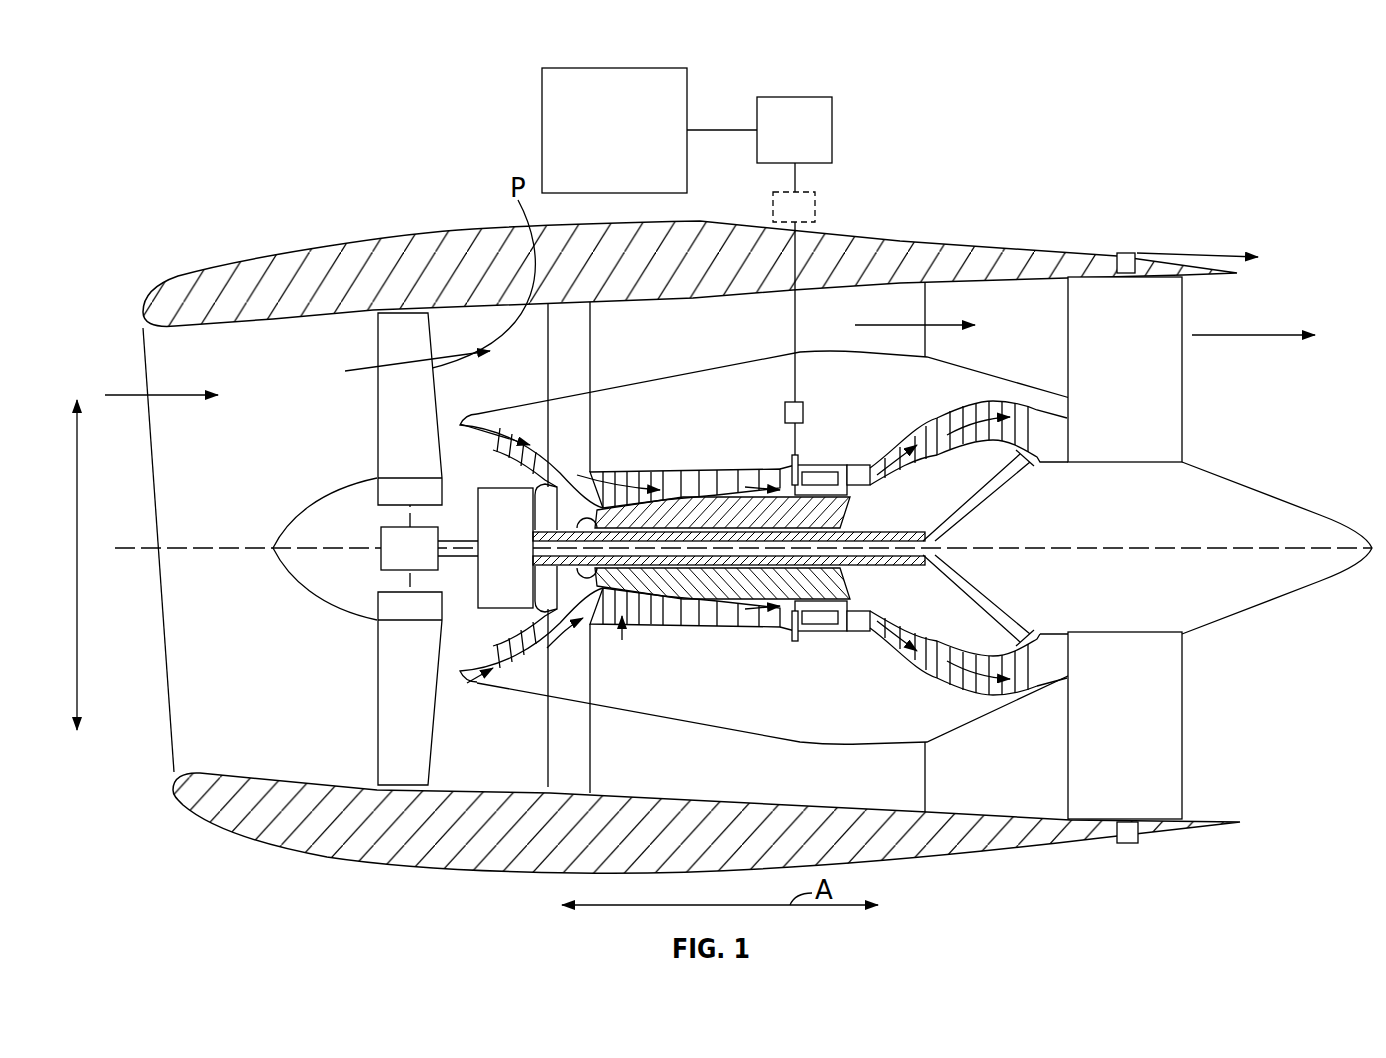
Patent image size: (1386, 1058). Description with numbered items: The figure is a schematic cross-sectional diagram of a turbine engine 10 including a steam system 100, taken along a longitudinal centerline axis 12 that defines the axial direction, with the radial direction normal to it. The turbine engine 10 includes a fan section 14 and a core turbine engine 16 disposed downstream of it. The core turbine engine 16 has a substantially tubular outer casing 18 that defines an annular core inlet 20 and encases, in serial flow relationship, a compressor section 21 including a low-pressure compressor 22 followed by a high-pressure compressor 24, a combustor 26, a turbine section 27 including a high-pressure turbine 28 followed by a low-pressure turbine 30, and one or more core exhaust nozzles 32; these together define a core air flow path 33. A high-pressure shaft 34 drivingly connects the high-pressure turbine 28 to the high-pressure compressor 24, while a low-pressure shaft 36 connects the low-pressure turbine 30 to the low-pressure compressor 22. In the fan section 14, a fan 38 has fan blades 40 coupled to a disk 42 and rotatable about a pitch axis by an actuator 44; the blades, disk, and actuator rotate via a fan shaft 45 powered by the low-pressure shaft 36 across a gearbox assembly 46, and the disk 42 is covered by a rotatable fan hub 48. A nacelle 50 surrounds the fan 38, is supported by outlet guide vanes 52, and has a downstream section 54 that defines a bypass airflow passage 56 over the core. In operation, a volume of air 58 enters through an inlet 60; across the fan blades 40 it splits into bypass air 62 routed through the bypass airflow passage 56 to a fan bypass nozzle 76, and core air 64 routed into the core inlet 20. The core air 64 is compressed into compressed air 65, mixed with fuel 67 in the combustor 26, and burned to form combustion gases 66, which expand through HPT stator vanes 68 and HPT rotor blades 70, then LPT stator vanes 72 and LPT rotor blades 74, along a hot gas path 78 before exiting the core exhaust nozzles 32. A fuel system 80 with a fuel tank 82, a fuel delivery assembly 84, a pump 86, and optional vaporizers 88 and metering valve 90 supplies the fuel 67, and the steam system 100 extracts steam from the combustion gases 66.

The turbine engine 10 is at (257, 240).
The longitudinal centerline axis 12 is at (1175, 545).
The fan section 14 is at (350, 331).
The core turbine engine 16 is at (813, 384).
The outer casing 18 is at (767, 733).
The core inlet 20 is at (490, 668).
The compressor section 21 is at (665, 415).
The low-pressure compressor 22 is at (537, 618).
The high-pressure compressor 24 is at (620, 627).
The combustor 26 is at (813, 627).
The turbine section 27 is at (910, 407).
The high-pressure turbine 28 is at (882, 628).
The low-pressure turbine 30 is at (1014, 702).
The core exhaust nozzles 32 is at (1128, 252).
The core air flow path 33 is at (548, 636).
The high-pressure shaft 34 is at (787, 477).
The low-pressure shaft 36 is at (963, 502).
The fan 38 is at (268, 670).
The fan blades 40 is at (376, 690).
The disk 42 is at (393, 493).
The actuator 44 is at (381, 553).
The fan shaft 45 is at (447, 535).
The gearbox assembly 46 is at (491, 496).
The fan hub 48 is at (307, 580).
The nacelle 50 is at (393, 853).
The outlet guide vanes 52 is at (590, 367).
The downstream section of the nacelle 54 is at (960, 247).
The bypass airflow passage 56 is at (710, 337).
The volume of air 58 is at (190, 393).
The inlet 60 is at (160, 738).
The bypass air 62 is at (345, 372).
The core air 64 is at (476, 423).
The compressed air 65 is at (647, 472).
The combustion gases 66 is at (973, 410).
The fuel 67 is at (798, 437).
The HPT stator vanes 68 is at (852, 635).
The HPT rotor blades 70 is at (870, 623).
The LPT stator vanes 72 is at (933, 667).
The LPT rotor blades 74 is at (947, 675).
The fan bypass nozzle 76 is at (1206, 381).
The hot gas path 78 is at (915, 448).
The fuel system 80 is at (736, 73).
The fuel tank 82 is at (540, 131).
The fuel delivery assembly 84 is at (795, 350).
The pump 86 is at (832, 130).
The vaporizers 88 is at (815, 210).
The metering valve 90 is at (783, 413).
The steam system 100 is at (1145, 385).